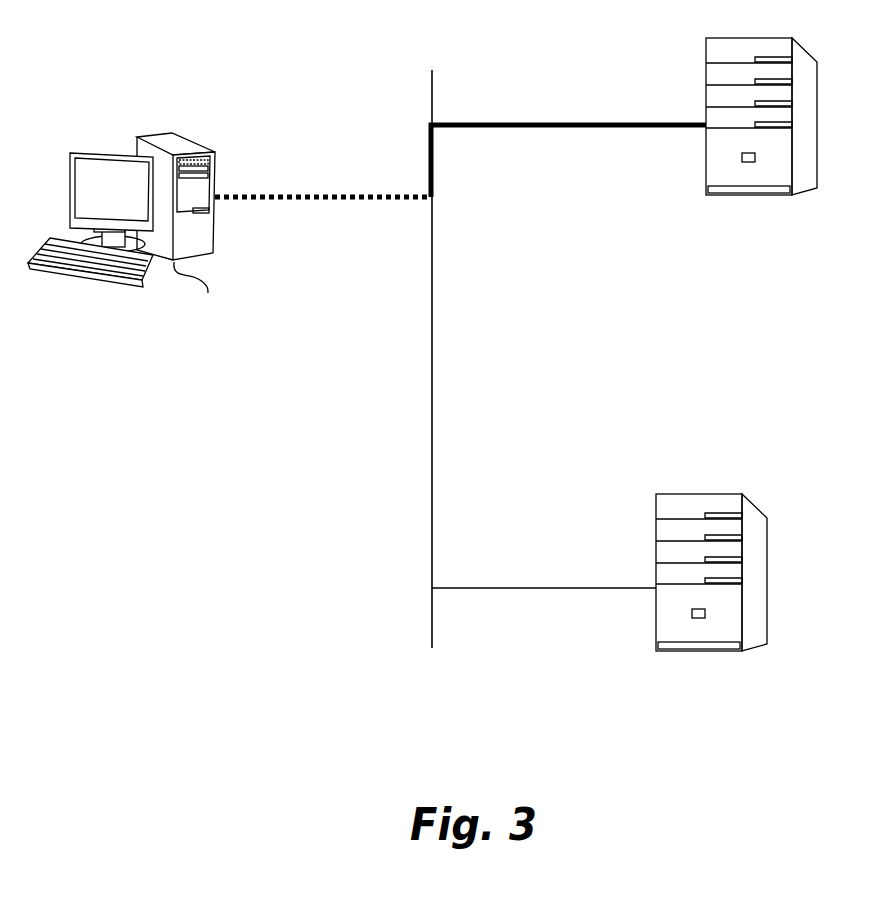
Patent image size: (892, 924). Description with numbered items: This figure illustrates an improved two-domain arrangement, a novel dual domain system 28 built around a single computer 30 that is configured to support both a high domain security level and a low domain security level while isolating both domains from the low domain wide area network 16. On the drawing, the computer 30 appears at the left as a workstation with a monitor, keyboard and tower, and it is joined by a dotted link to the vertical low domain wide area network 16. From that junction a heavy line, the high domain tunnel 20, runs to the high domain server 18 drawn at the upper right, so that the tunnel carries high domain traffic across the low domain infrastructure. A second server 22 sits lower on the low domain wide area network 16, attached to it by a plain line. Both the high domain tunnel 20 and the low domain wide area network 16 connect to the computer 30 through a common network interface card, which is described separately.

The dual domain system 28 is at (109, 63).
The computer 30 is at (124, 229).
The low domain wide area network 16 is at (433, 312).
The high domain tunnel 20 is at (516, 128).
The high domain server 18 is at (718, 196).
The low domain server 22 is at (680, 652).